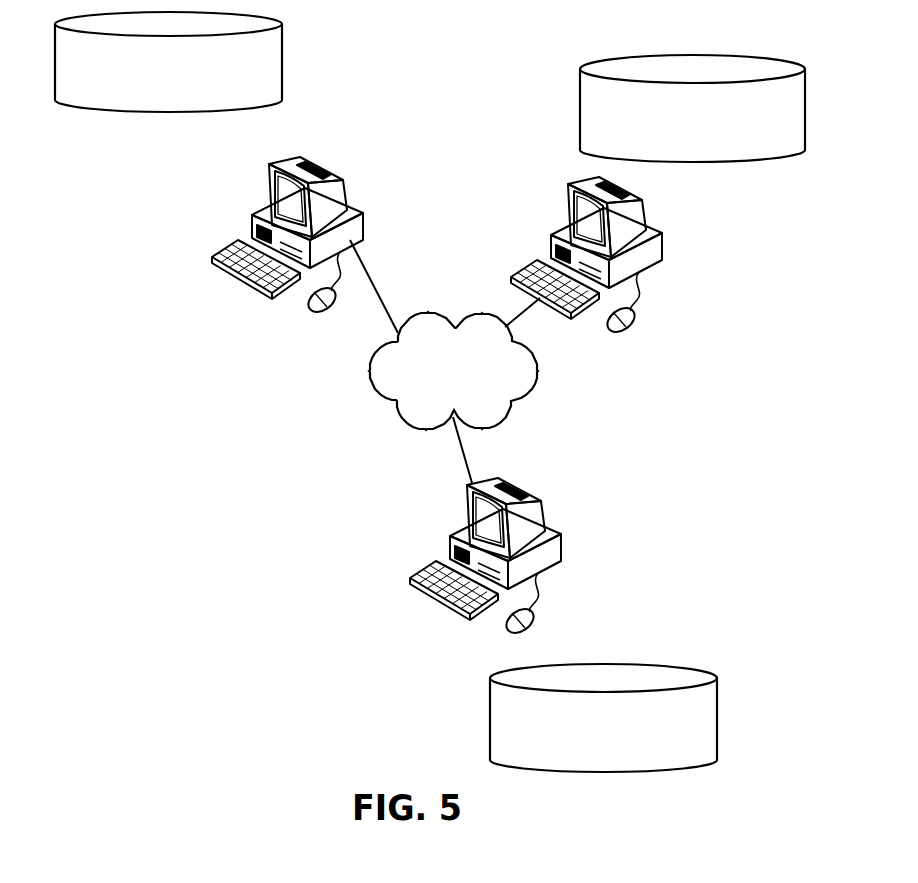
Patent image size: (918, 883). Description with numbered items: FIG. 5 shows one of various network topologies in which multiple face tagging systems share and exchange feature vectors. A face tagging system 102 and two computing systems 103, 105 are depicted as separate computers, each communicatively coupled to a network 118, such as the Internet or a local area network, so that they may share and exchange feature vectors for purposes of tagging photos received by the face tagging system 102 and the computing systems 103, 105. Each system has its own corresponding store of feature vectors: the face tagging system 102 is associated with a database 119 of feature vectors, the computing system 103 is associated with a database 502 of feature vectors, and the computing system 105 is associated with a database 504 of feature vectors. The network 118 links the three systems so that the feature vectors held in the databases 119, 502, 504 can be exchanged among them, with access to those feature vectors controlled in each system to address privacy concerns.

The database of feature vectors 502 is at (282, 53).
The database of feature vectors 504 is at (580, 112).
The database of feature vectors 119 is at (717, 718).
The network 118 is at (438, 391).
The computing system 103 is at (249, 169).
The computing system 105 is at (672, 230).
The face tagging system 102 is at (556, 503).